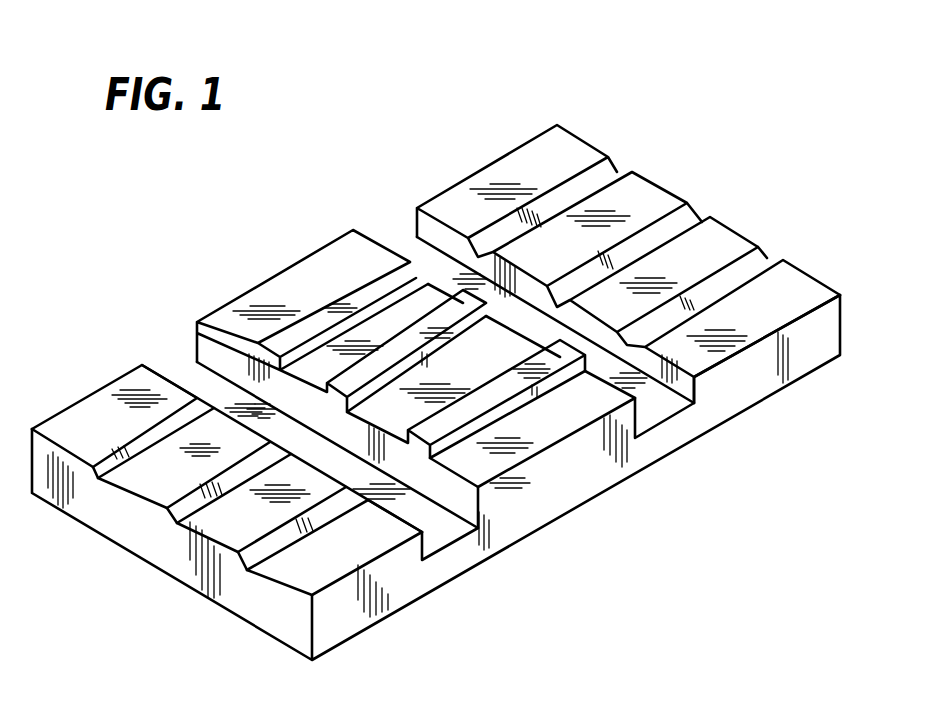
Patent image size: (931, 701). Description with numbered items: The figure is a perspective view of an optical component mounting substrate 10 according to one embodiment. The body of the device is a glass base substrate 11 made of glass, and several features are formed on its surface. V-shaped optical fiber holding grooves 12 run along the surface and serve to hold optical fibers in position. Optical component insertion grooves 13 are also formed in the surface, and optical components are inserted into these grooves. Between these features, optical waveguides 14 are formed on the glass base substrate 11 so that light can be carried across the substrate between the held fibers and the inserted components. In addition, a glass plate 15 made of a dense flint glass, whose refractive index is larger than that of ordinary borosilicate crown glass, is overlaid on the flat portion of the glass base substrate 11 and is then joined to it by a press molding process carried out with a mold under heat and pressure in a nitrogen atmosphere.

The optical component mounting substrate 10 is at (588, 58).
The glass base substrate 11 is at (577, 463).
The V-shaped optical fiber holding grooves 12 is at (598, 168).
The optical component insertion grooves 13 is at (440, 532).
The optical waveguides 14 is at (505, 388).
The glass plate 15 is at (527, 480).